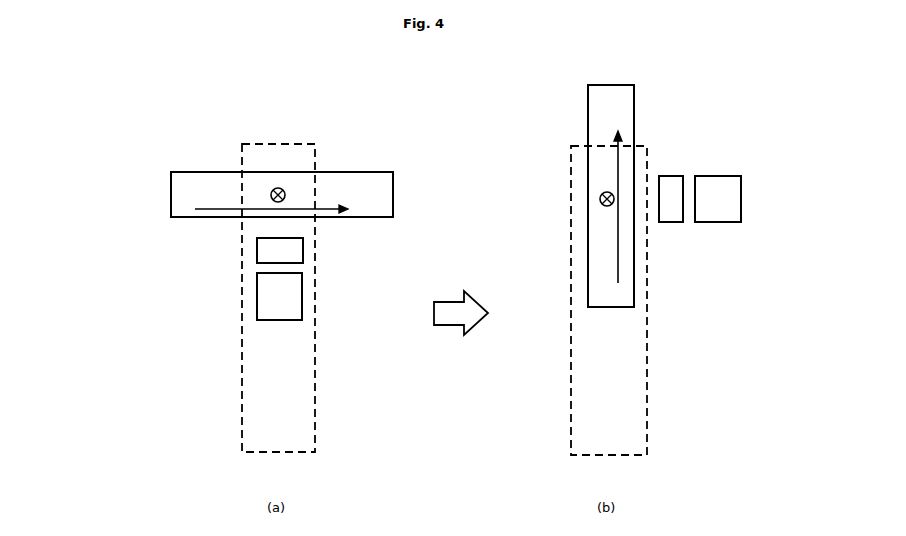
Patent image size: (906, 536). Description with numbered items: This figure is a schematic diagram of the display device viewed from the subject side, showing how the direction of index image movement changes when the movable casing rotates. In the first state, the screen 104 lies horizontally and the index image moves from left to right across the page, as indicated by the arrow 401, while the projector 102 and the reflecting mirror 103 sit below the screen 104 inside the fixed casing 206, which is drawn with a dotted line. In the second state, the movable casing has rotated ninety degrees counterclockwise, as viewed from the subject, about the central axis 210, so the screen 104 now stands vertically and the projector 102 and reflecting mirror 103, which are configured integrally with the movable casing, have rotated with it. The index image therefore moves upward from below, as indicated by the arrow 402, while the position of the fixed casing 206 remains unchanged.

The projector 102 is at (297, 306).
The reflecting mirror 103 is at (297, 259).
The screen 104 is at (183, 193).
The fixed casing 206 is at (252, 407).
The central axis 210 is at (285, 193).
The arrow 401 is at (212, 208).
The arrow 402 is at (620, 162).